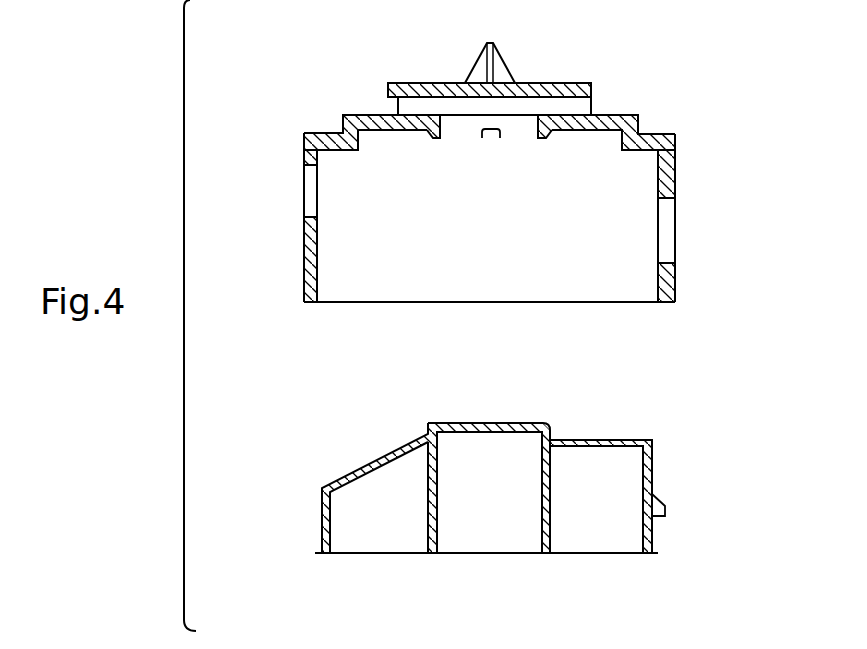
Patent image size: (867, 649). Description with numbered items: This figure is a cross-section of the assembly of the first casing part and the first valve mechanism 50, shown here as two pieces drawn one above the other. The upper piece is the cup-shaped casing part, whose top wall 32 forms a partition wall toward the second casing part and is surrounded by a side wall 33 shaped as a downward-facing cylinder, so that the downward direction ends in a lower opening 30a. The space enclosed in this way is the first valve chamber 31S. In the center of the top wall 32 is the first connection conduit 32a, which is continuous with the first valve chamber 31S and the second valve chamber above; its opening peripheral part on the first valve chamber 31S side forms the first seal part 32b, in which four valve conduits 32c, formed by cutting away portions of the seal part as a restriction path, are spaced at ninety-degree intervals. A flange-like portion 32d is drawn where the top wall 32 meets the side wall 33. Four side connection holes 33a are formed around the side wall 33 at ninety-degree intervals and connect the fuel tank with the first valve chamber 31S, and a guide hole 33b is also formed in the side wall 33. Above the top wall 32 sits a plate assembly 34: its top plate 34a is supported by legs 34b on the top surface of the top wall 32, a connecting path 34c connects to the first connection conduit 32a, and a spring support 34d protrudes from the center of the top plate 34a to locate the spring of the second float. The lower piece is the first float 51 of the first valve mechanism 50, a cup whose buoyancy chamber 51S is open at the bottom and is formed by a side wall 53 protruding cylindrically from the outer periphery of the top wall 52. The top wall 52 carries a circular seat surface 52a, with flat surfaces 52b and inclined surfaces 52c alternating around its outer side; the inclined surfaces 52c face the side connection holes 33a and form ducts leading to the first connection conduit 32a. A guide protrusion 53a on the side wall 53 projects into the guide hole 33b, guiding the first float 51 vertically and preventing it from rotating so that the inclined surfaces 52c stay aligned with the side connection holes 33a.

The lower opening 30a is at (637, 303).
The first valve chamber 31S is at (400, 277).
The top wall 32 is at (618, 115).
The first connection conduit 32a is at (523, 131).
The first seal part 32b is at (433, 141).
The valve conduit 32c is at (487, 140).
The flange of cover member 32d is at (323, 133).
The side wall 33 is at (677, 158).
The side connection hole 33a is at (310, 193).
The guide hole 33b is at (667, 217).
The lid plate 34 is at (416, 83).
The top plate 34a is at (539, 82).
The leg 34b is at (396, 108).
The connecting path 34c is at (584, 106).
The spring support 34d is at (504, 63).
The first valve mechanism 50 is at (648, 398).
The first float 51 is at (648, 438).
The buoyancy chamber 51S is at (402, 540).
The top wall 52 is at (420, 362).
The seat surface 52a is at (492, 423).
The flat surface 52b is at (596, 440).
The inclined surface 52c is at (388, 452).
The side wall 53 is at (653, 470).
The guide protrusion 53a is at (665, 509).